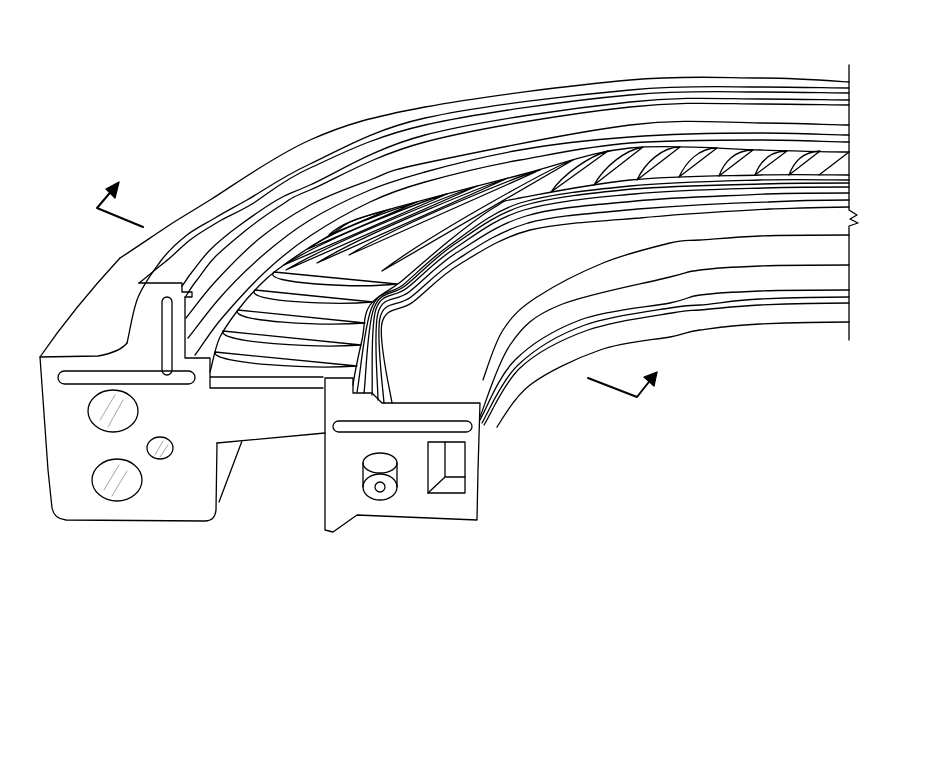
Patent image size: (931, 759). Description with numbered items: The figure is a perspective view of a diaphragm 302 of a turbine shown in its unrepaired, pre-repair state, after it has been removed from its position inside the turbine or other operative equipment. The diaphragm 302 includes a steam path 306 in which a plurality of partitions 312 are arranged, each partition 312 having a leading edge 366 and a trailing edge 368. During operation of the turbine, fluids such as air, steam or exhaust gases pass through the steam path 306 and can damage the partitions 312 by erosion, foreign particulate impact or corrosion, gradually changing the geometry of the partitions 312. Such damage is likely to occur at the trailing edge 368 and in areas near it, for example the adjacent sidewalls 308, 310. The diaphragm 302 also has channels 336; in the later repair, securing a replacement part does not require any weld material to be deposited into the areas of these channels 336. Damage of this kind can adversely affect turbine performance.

The diaphragm 302 is at (152, 67).
The steam path 306 is at (327, 557).
The sidewall 308 is at (648, 181).
The sidewall 310 is at (410, 195).
The partitions 312 is at (467, 193).
The channels 336 is at (300, 518).
The leading edge 366 is at (282, 440).
The trailing edge 368 is at (313, 141).